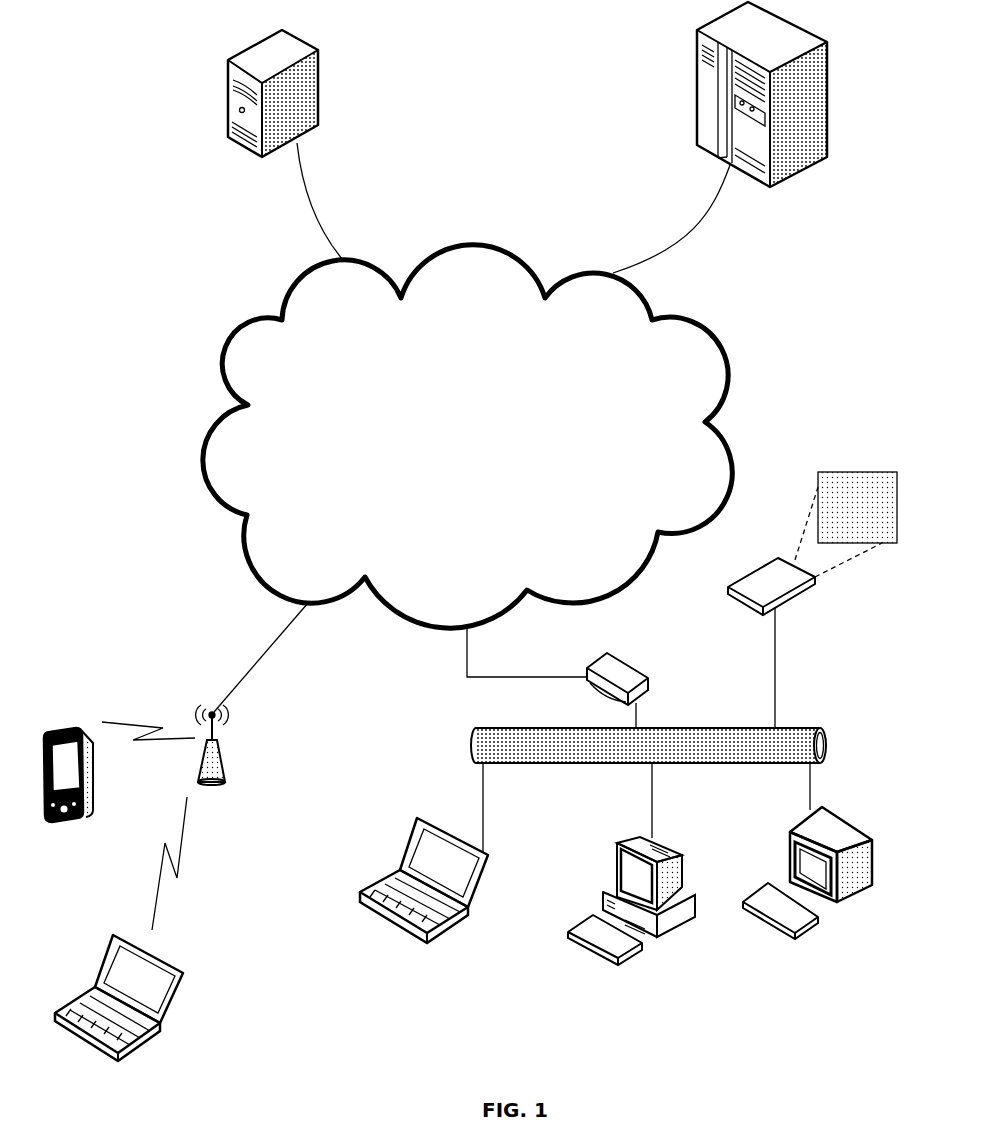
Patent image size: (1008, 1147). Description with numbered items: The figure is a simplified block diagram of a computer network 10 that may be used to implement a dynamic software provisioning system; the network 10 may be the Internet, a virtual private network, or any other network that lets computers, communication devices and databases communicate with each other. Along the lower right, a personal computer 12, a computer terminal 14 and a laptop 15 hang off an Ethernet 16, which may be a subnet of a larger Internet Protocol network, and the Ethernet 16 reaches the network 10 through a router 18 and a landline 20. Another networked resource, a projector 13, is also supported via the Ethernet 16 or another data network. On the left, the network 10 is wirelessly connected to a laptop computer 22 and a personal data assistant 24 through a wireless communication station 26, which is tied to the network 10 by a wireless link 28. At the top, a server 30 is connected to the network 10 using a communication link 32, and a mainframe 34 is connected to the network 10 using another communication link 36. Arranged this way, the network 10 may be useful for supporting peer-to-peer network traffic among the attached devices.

The network 10 is at (165, 322).
The personal computer 12 is at (603, 902).
The projector 13 is at (787, 607).
The computer terminal 14 is at (857, 828).
The laptop 15 is at (405, 848).
The Ethernet 16 is at (817, 727).
The router 18 is at (648, 677).
The landline 20 is at (475, 682).
The laptop computer 22 is at (137, 1050).
The personal data assistant 24 is at (72, 730).
The wireless communication station 26 is at (225, 778).
The wireless link 28 is at (257, 663).
The server 30 is at (318, 92).
The communication link 32 is at (325, 235).
The mainframe 34 is at (785, 180).
The communication link 36 is at (697, 222).